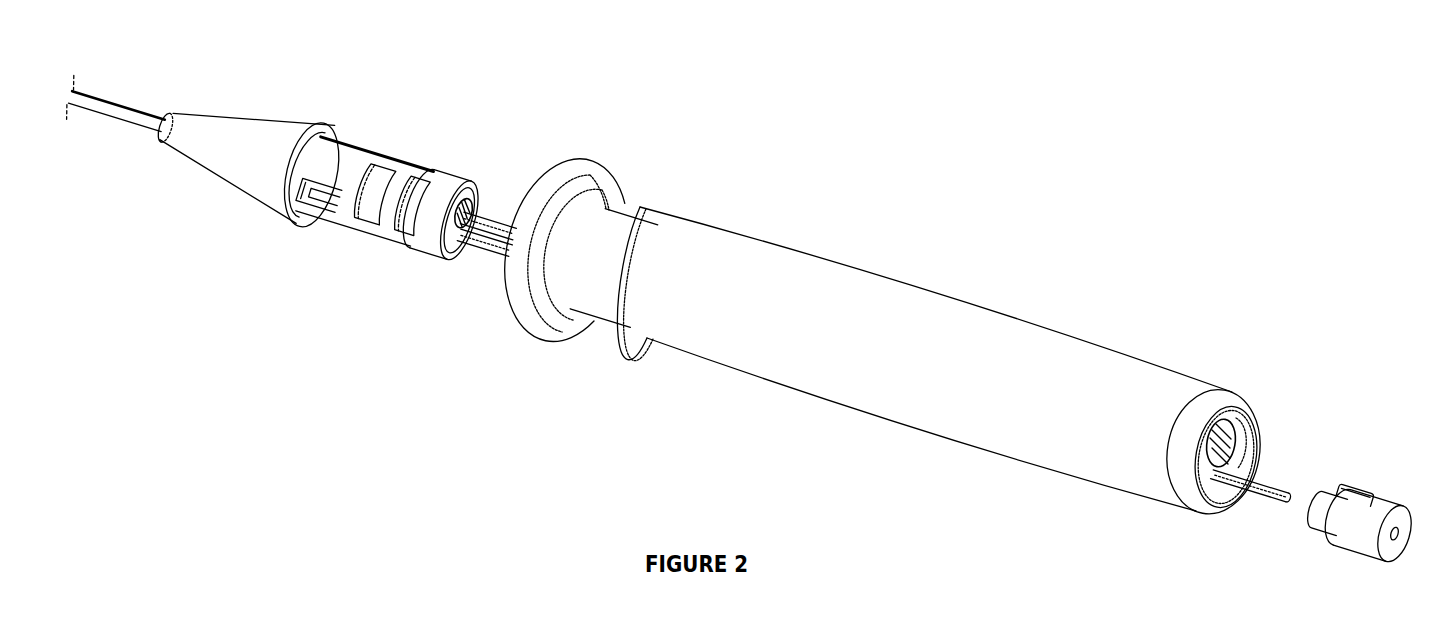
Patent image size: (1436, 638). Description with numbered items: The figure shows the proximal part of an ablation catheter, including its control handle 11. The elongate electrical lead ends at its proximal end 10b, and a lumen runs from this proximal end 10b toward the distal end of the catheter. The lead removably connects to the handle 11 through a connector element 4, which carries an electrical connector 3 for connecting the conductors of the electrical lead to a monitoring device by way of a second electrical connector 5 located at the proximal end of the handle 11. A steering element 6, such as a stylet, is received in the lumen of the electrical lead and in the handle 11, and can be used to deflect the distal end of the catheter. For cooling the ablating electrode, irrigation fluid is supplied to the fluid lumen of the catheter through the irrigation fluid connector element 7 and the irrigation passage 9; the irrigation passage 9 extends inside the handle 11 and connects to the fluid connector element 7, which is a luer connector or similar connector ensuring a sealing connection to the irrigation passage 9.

The proximal end 10b is at (93, 95).
The connector element 4 is at (355, 110).
The electrical connector 3 is at (467, 195).
The steering element 6 is at (494, 210).
The irrigation passage 9 is at (470, 250).
The handle 11 is at (925, 289).
The second electrical connector 5 is at (1228, 433).
The irrigation fluid connector element 7 is at (1393, 508).